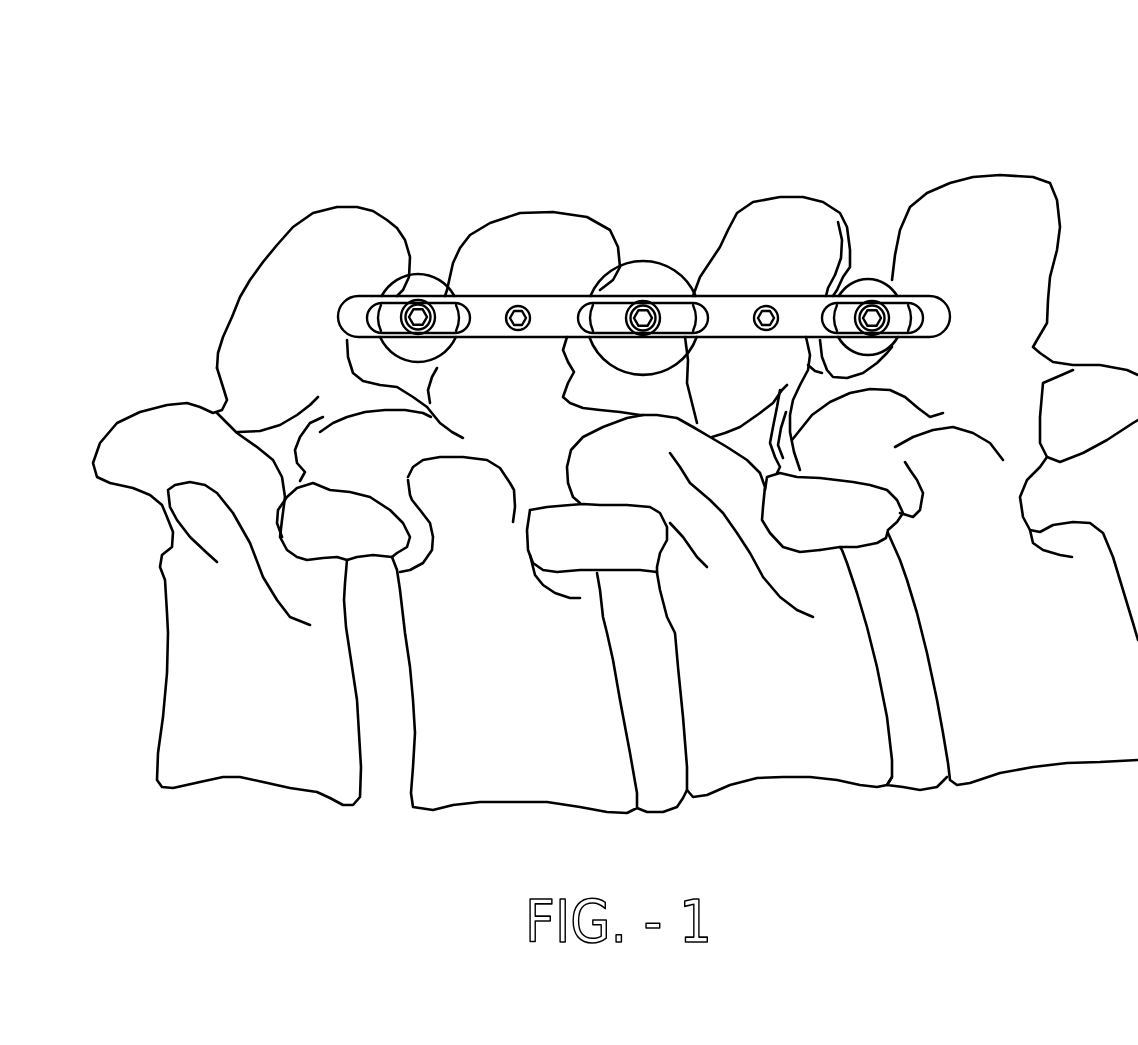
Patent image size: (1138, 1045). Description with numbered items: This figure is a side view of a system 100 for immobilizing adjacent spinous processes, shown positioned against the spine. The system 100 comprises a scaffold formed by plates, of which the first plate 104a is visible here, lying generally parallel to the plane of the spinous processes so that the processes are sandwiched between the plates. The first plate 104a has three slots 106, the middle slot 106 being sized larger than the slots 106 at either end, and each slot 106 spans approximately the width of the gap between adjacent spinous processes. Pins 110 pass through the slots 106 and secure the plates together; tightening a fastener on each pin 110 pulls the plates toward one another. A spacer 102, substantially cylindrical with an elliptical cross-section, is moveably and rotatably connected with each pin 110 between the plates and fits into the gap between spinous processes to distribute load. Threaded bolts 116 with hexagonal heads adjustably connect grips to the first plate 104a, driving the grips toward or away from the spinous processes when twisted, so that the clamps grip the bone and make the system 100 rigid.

The system 100 is at (609, 216).
The spacer 102 is at (615, 481).
The first plate 104a is at (644, 243).
The slot 106 is at (663, 271).
The pin 110 is at (609, 294).
The threaded bolt 116 is at (711, 206).